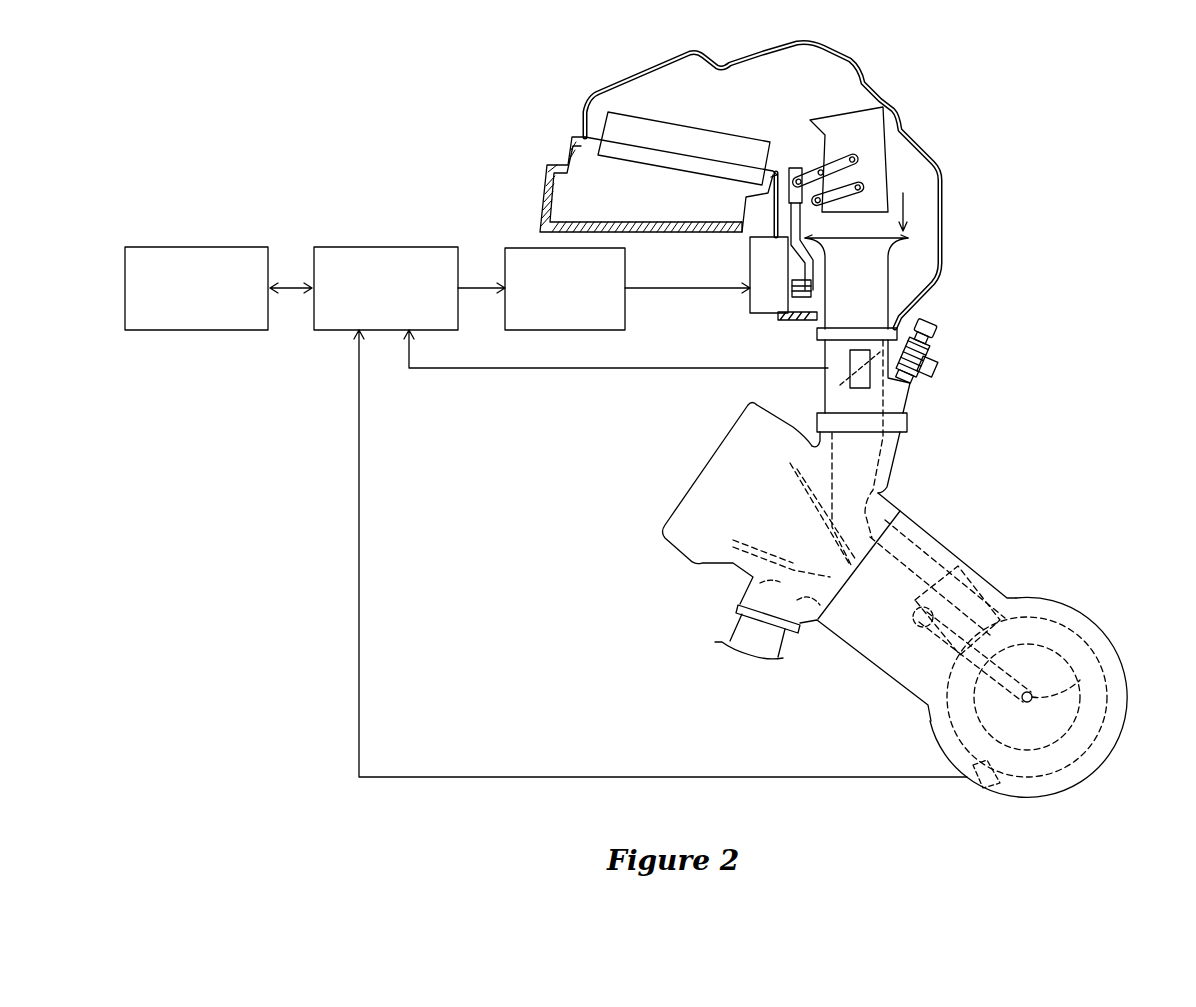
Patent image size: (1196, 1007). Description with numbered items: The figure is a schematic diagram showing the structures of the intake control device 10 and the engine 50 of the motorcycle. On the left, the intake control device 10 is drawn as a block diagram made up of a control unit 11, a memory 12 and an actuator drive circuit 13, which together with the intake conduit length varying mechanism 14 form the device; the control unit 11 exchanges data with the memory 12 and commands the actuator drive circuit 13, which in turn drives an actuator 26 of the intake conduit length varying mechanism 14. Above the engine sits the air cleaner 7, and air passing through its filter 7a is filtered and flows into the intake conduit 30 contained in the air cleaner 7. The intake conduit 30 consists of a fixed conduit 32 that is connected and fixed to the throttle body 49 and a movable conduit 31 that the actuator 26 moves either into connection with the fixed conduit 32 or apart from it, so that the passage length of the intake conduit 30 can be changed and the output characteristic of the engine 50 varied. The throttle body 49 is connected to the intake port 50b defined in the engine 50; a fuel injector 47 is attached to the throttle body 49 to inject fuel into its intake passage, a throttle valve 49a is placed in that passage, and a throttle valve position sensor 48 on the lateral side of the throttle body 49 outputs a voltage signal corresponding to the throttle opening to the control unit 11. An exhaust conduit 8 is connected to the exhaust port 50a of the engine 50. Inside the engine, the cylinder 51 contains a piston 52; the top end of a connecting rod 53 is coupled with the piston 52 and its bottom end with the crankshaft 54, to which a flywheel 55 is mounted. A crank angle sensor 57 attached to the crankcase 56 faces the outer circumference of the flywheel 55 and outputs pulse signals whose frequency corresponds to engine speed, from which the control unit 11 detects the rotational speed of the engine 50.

The air cleaner 7 is at (863, 76).
The filter 7a is at (708, 130).
The exhaust conduit 8 is at (727, 622).
The intake control device 10 is at (536, 126).
The control unit 11 is at (384, 247).
The memory 12 is at (193, 247).
The actuator drive circuit 13 is at (510, 248).
The intake conduit length varying mechanism 14 is at (792, 162).
The actuator 26 is at (750, 310).
The intake conduit 30 is at (1020, 158).
The movable conduit 31 is at (940, 187).
The fixed conduit 32 is at (935, 258).
The fuel injector 47 is at (945, 349).
The throttle valve position sensor 48 is at (905, 317).
The throttle body 49 is at (915, 415).
The throttle valve 49a is at (918, 382).
The engine 50 is at (965, 525).
The exhaust port 50a is at (812, 650).
The intake port 50b is at (905, 470).
The cylinder 51 is at (950, 555).
The piston 52 is at (1000, 592).
The connecting rod 53 is at (888, 665).
The crankshaft 54 is at (1100, 727).
The flywheel 55 is at (1080, 625).
The crankcase 56 is at (1110, 635).
The crank angle sensor 57 is at (945, 760).